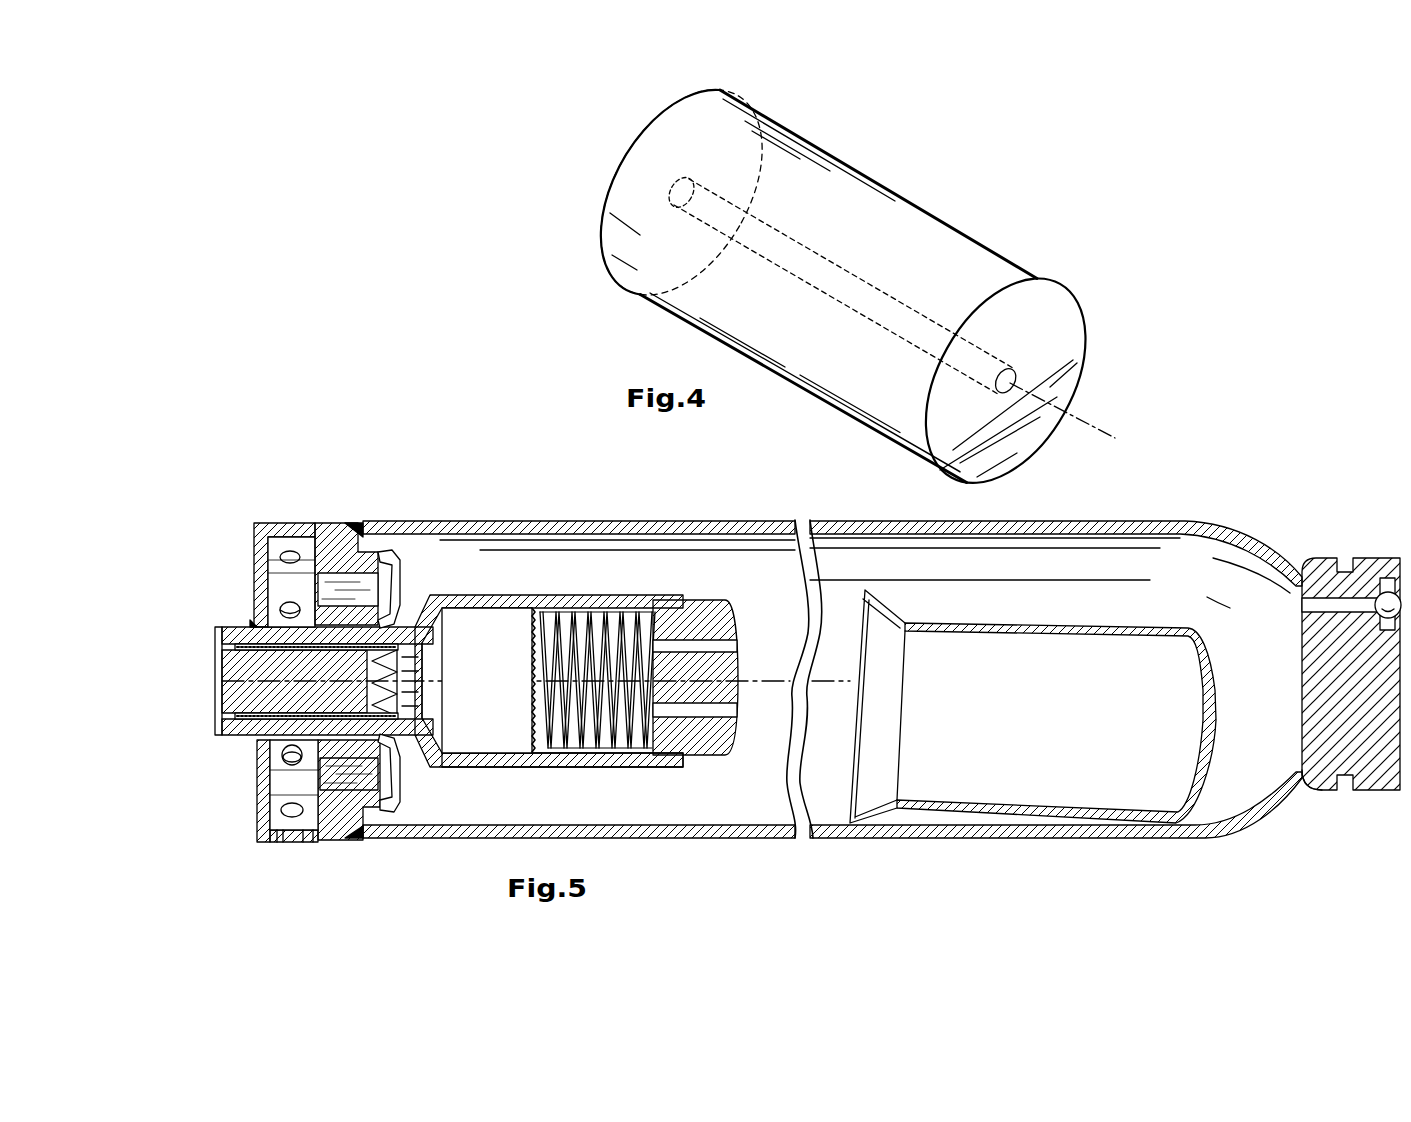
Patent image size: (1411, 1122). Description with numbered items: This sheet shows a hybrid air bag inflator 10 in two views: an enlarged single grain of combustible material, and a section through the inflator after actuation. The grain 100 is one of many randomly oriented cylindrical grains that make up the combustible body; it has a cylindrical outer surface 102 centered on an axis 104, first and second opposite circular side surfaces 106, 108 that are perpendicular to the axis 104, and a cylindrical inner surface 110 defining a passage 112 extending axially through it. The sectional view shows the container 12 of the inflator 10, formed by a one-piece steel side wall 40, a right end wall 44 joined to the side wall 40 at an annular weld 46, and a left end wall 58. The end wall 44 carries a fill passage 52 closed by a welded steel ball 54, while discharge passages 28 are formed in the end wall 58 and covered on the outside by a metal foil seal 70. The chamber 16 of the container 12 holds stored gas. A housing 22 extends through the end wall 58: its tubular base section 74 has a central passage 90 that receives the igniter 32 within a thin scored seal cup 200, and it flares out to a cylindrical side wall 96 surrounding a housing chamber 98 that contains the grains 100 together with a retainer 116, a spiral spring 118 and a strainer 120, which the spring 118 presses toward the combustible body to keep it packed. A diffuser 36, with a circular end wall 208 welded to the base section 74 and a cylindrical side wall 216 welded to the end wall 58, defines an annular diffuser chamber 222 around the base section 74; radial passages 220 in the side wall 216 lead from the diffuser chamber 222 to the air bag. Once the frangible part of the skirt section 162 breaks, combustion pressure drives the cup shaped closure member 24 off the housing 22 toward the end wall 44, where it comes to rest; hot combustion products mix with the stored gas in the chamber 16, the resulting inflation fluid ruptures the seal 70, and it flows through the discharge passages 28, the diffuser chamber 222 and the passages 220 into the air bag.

In FIG. 5, the inflator 10 is at (823, 852).
In FIG. 5, the container 12 is at (1207, 516).
In FIG. 5, the chamber 16 is at (1250, 562).
In FIG. 5, the housing 22 is at (562, 641).
In FIG. 5, the cup shaped closure member 24 is at (990, 615).
In FIG. 5, the discharge passages 28 is at (350, 587).
In FIG. 5, the igniter 32 is at (238, 660).
In FIG. 5, the diffuser 36 is at (305, 520).
In FIG. 5, the side wall 40 is at (1094, 520).
In FIG. 5, the end wall 44 is at (1320, 698).
In FIG. 5, the annular weld 46 is at (1308, 785).
In FIG. 5, the fill passage 52 is at (1305, 603).
In FIG. 5, the steel ball 54 is at (1390, 582).
In FIG. 5, the end wall 58 is at (328, 846).
In FIG. 5, the metal foil seal 70 is at (315, 783).
In FIG. 5, the base section 74 is at (277, 733).
In FIG. 5, the passage 90 is at (412, 705).
In FIG. 5, the side wall 96 is at (598, 756).
In FIG. 5, the housing chamber 98 is at (507, 728).
In FIG. 4, the grain 100 is at (853, 286).
In FIG. 4, the cylindrical outer surface 102 is at (680, 282).
In FIG. 4, the axis 104 is at (1118, 440).
In FIG. 4, the first side surface 106 is at (1063, 318).
In FIG. 4, the second side surface 108 is at (620, 163).
In FIG. 4, the cylindrical inner surface 110 is at (1013, 374).
In FIG. 4, the passage 112 is at (1012, 398).
In FIG. 5, the retainer 116 is at (518, 608).
In FIG. 5, the spiral spring 118 is at (578, 608).
In FIG. 5, the strainer 120 is at (703, 607).
In FIG. 5, the skirt section 162 is at (884, 605).
In FIG. 5, the seal cup 200 is at (392, 640).
In FIG. 5, the end wall 208 is at (258, 566).
In FIG. 5, the side wall 216 is at (312, 840).
In FIG. 5, the passages 220 is at (295, 840).
In FIG. 5, the diffuser chamber 222 is at (283, 577).